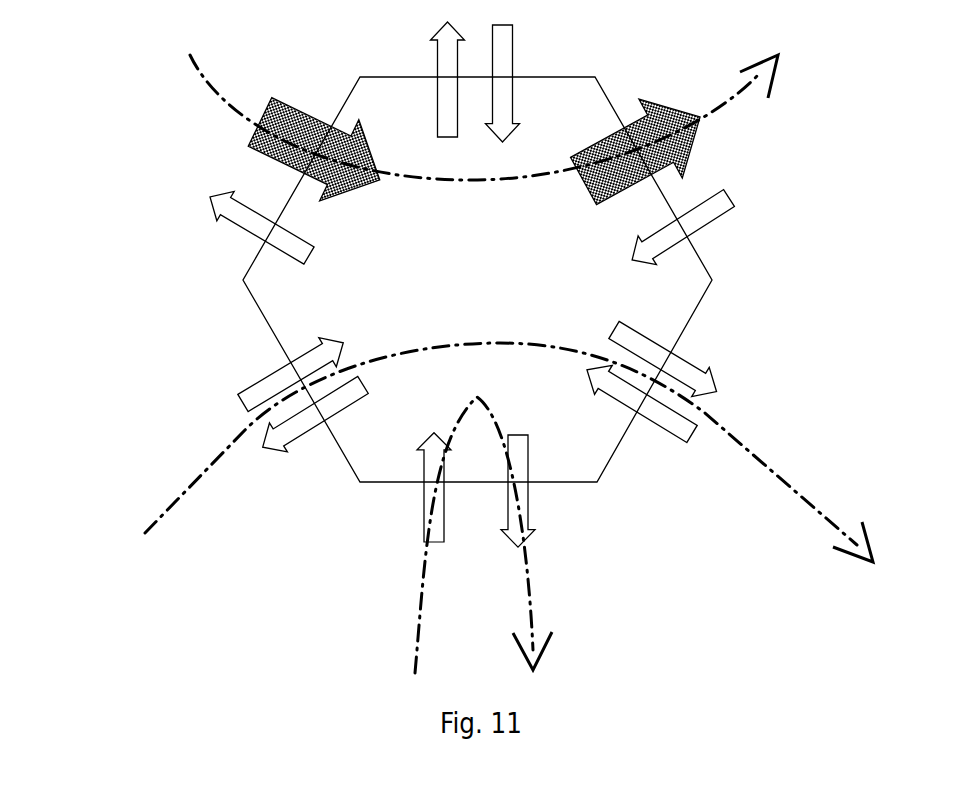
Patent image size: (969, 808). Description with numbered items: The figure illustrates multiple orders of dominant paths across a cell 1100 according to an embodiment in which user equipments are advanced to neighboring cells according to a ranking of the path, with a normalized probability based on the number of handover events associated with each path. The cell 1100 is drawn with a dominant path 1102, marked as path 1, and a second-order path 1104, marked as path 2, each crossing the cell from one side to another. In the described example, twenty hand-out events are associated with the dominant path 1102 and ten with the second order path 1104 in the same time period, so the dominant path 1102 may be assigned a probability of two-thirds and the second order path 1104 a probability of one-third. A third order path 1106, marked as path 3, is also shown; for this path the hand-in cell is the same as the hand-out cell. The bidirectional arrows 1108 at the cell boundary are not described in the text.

The cell 1100 is at (400, 76).
The dominant path 1102 is at (222, 103).
The second order path 1104 is at (158, 528).
The third order path 1106 is at (523, 550).
The bidirectional coupling arrows 1108 is at (108, 363).
The path 1 is at (445, 117).
The path 2 is at (507, 456).
The path 3 is at (461, 535).